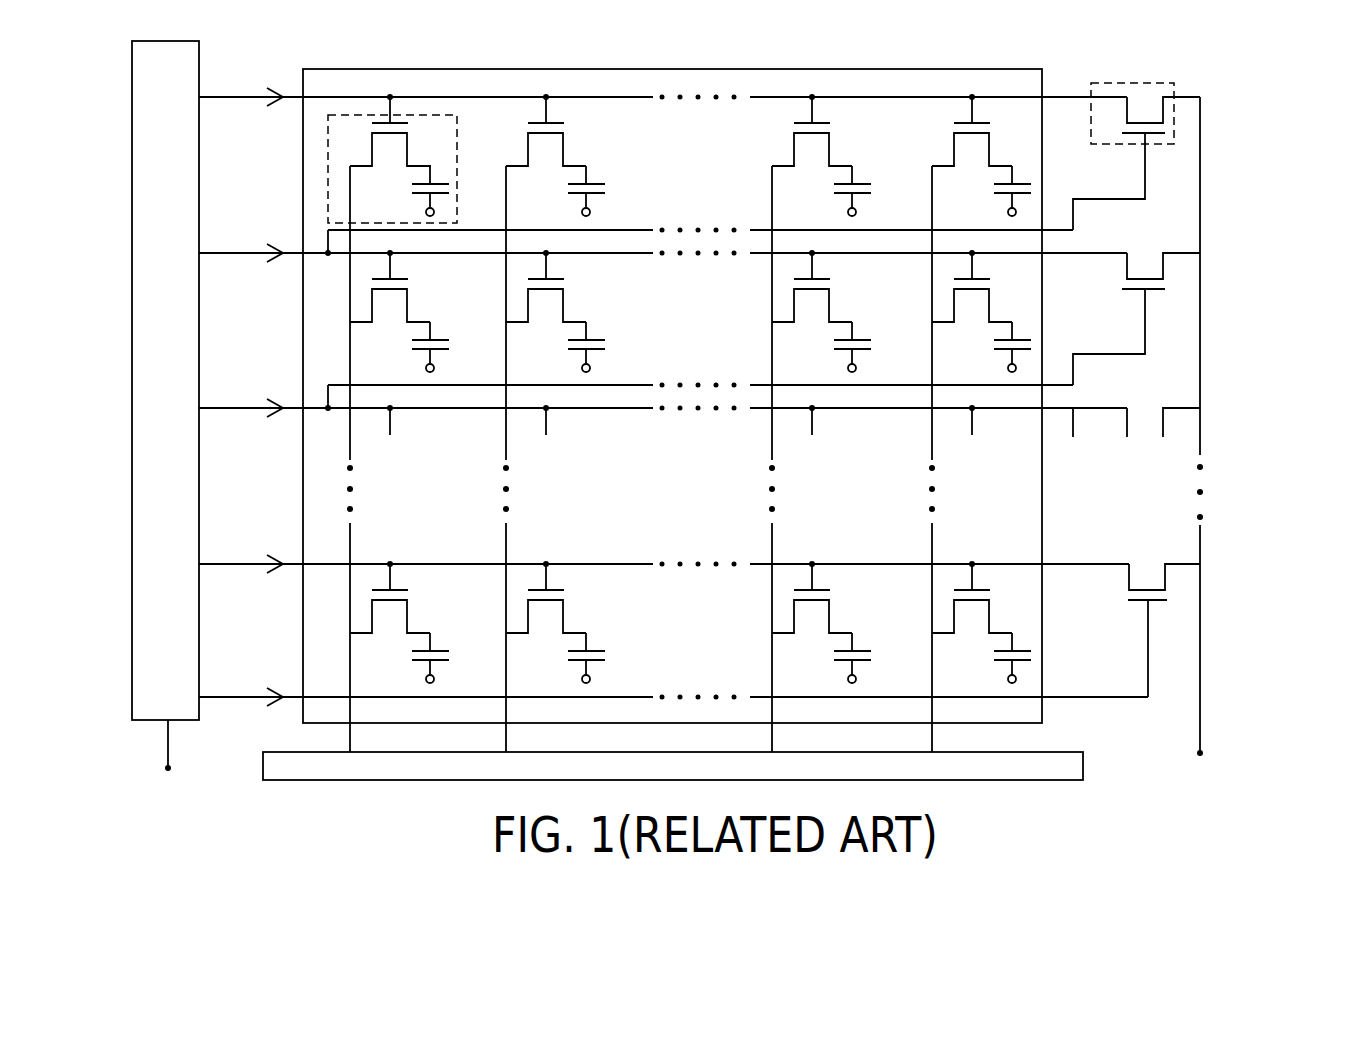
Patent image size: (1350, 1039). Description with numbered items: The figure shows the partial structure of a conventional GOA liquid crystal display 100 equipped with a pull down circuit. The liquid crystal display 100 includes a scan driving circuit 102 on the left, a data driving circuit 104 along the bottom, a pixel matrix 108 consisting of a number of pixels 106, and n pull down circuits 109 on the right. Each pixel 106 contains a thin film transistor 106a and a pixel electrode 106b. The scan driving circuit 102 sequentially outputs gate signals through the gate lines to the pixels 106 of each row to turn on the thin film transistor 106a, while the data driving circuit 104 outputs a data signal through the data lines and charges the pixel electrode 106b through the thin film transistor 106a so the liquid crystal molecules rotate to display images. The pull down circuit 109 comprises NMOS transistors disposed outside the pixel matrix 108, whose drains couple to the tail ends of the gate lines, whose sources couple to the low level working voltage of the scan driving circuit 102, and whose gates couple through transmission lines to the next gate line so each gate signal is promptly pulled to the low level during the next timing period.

The liquid crystal display 100 is at (1338, 53).
The scan driving circuit 102 is at (132, 692).
The data driving circuit 104 is at (1086, 763).
The pixel 106 is at (438, 126).
The thin film transistor 106a is at (372, 150).
The pixel electrode 106b is at (440, 183).
The pixel matrix 108 is at (672, 69).
The pull down circuit 109 is at (1133, 83).